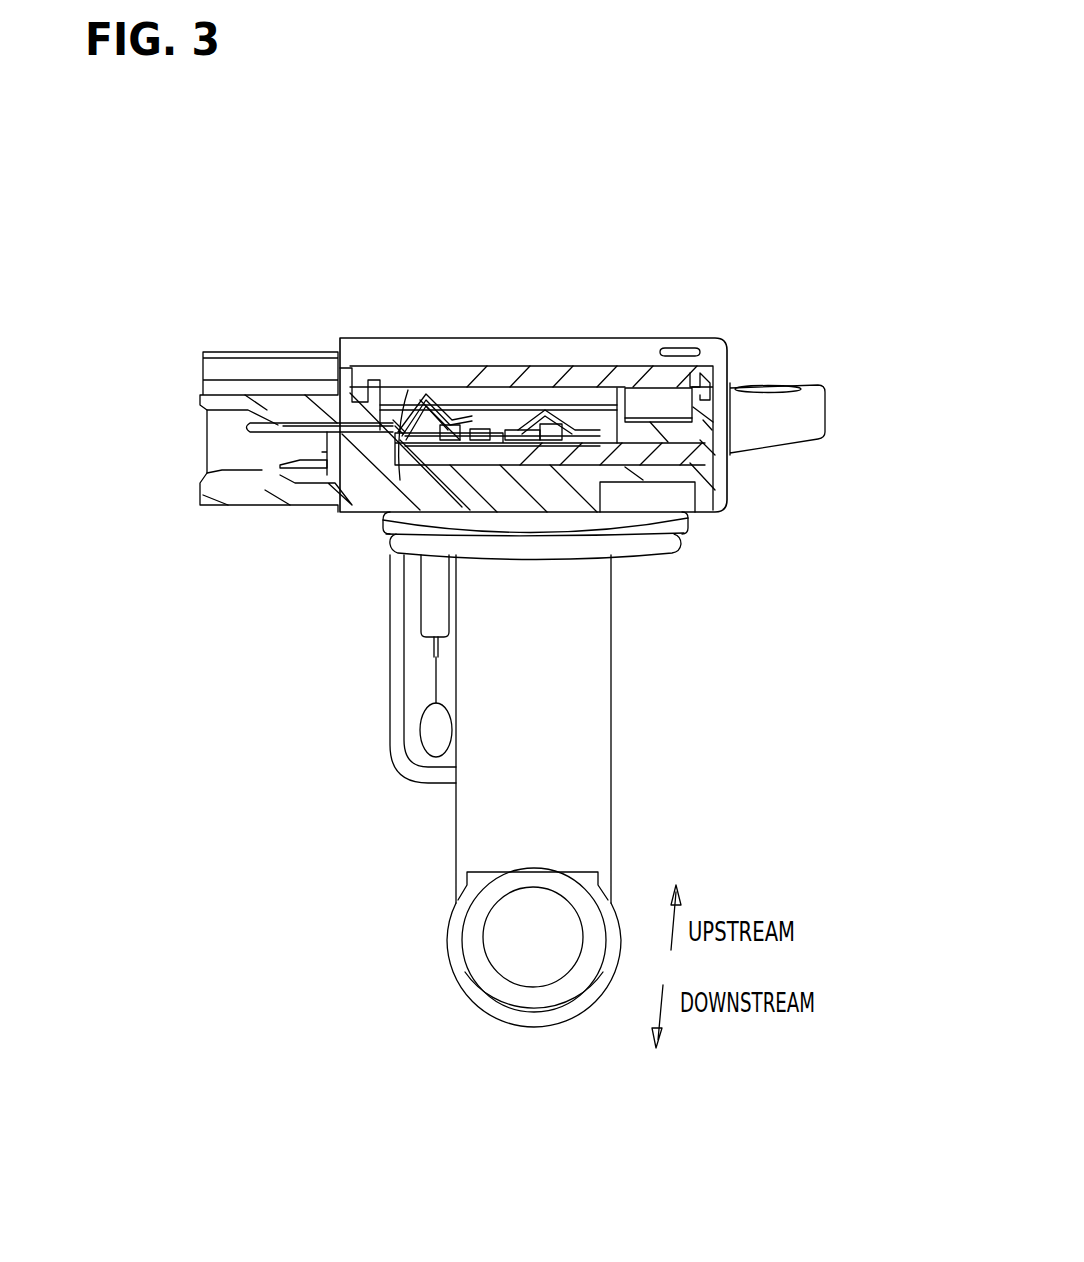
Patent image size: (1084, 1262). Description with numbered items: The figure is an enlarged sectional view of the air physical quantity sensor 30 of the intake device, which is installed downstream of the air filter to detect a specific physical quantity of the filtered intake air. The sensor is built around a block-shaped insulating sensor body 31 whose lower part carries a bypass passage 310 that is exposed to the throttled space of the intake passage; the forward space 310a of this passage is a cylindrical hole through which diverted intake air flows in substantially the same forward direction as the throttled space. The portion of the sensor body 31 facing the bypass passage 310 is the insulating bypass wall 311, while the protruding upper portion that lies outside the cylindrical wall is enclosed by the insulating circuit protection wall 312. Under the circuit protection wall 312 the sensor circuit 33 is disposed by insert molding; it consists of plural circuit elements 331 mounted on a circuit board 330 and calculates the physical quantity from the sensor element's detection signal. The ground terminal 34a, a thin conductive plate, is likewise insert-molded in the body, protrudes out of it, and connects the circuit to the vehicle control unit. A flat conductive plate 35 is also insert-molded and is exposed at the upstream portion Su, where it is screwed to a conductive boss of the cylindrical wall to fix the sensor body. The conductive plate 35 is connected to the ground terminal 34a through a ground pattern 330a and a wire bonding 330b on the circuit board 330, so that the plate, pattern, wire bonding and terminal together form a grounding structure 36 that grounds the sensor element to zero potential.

The air physical quantity sensor 30 is at (718, 340).
The sensor body 31 is at (626, 790).
The bypass wall 311 is at (577, 873).
The circuit protection wall 312 is at (705, 473).
The bypass passage 310 is at (534, 987).
The forward space 310a is at (508, 972).
The sensor circuit 33 is at (504, 335).
The circuit board 330 is at (542, 426).
The circuit elements 331 is at (517, 430).
The ground pattern 330a is at (442, 420).
The wire bonding 330b is at (403, 435).
The ground terminal 34a is at (266, 422).
The conductive plate 35 is at (718, 390).
The grounding structure 36 is at (478, 438).
The upstream portion Su is at (830, 413).